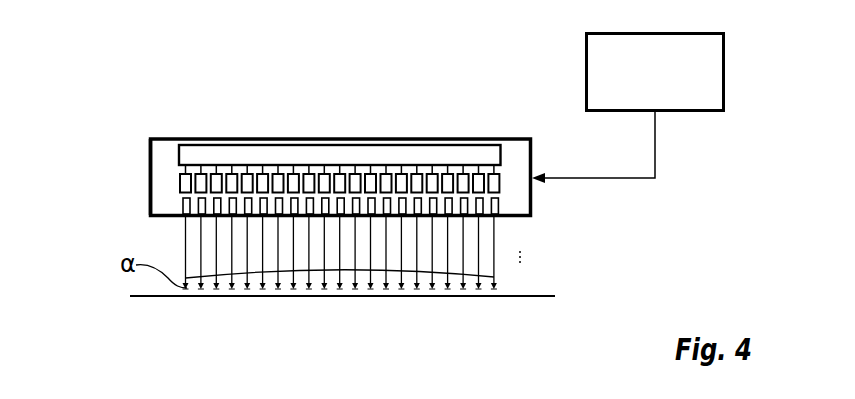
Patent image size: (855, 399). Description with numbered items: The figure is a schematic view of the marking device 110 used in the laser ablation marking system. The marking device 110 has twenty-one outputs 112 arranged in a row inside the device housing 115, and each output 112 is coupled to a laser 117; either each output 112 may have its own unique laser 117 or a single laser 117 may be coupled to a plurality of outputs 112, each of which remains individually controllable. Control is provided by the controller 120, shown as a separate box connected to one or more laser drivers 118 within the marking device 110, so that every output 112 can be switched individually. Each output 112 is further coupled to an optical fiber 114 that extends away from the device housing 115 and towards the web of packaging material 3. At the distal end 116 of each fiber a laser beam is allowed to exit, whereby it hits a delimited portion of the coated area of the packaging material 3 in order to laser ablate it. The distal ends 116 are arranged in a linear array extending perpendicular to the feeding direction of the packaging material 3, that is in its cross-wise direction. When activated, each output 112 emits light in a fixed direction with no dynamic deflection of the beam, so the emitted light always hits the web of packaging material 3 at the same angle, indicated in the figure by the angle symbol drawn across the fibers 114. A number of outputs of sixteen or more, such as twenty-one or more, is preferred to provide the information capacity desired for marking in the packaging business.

The marking device 110 is at (341, 147).
The device housing 115 is at (157, 137).
The laser 117 is at (179, 183).
The laser driver 118 is at (379, 152).
The output 112 is at (180, 205).
The optical fiber 114 is at (494, 243).
The distal end 116 is at (494, 289).
The packaging material 3 is at (520, 296).
The controller 120 is at (585, 80).